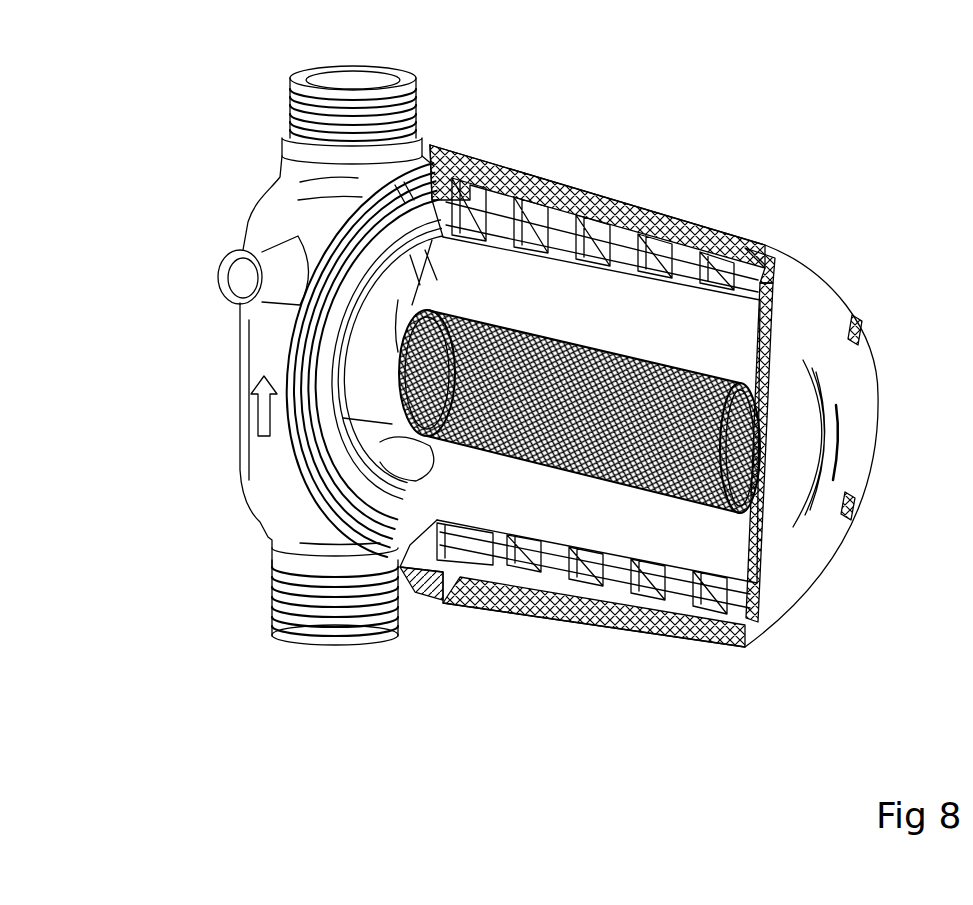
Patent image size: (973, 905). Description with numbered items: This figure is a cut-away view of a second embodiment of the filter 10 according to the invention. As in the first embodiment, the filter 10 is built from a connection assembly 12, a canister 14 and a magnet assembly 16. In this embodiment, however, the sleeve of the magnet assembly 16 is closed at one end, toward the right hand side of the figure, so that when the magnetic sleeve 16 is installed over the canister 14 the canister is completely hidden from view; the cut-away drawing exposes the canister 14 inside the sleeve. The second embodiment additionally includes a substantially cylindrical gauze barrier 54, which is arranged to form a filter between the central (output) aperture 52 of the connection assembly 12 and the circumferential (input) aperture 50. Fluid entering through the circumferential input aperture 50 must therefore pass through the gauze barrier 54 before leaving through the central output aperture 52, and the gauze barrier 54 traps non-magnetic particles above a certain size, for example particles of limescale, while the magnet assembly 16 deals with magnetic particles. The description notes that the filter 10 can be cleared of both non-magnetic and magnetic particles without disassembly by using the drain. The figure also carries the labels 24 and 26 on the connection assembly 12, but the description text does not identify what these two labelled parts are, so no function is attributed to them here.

The filter 10 is at (163, 227).
The connection assembly 12 is at (257, 503).
The canister 14 is at (480, 230).
The magnet assembly 16 is at (617, 207).
The outlet port 24 is at (348, 650).
The inlet port 26 is at (355, 87).
The circumferential (input) aperture 50 is at (387, 467).
The central (output) aperture 52 is at (440, 348).
The gauze barrier 54 is at (655, 362).